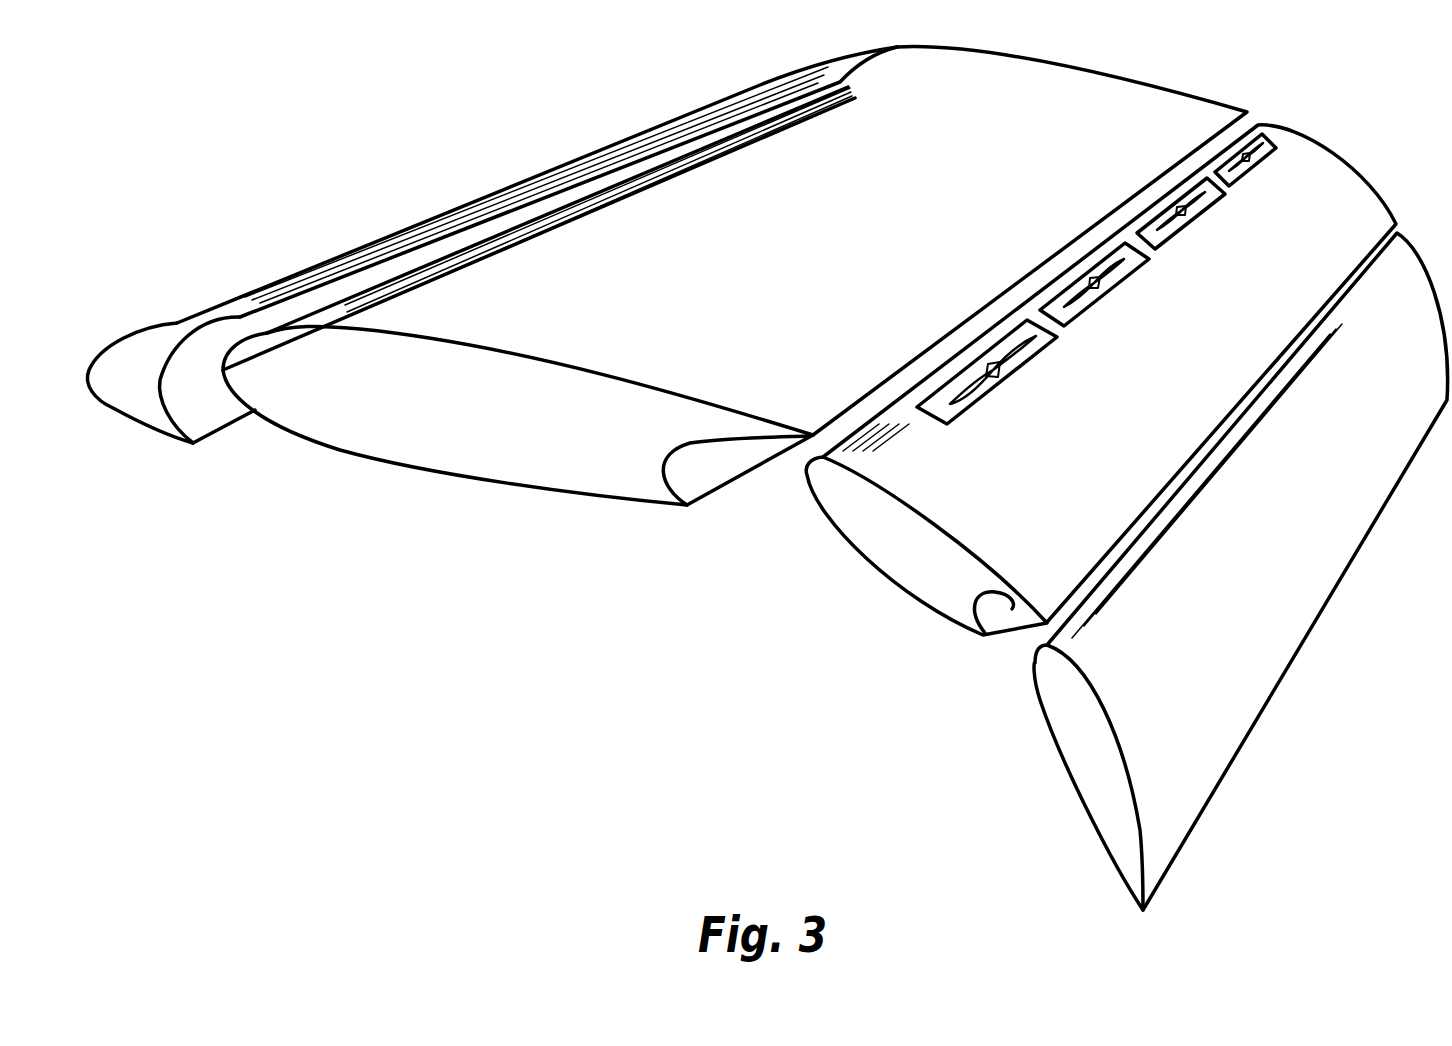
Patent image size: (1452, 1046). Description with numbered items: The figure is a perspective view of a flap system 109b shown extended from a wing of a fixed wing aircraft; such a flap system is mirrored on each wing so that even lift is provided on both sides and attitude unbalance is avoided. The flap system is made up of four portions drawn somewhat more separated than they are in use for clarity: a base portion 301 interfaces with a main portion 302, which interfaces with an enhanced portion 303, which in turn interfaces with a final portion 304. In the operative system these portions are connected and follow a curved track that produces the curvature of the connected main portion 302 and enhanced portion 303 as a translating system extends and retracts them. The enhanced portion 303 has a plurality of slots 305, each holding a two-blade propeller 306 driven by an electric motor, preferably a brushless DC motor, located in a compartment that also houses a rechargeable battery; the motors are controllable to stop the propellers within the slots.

The flap system 109b is at (268, 143).
The base portion 301 is at (120, 350).
The main portion 302 is at (478, 300).
The enhanced portion 303 is at (877, 533).
The final portion 304 is at (1067, 745).
The slots 305 is at (937, 390).
The propeller 306 is at (977, 390).